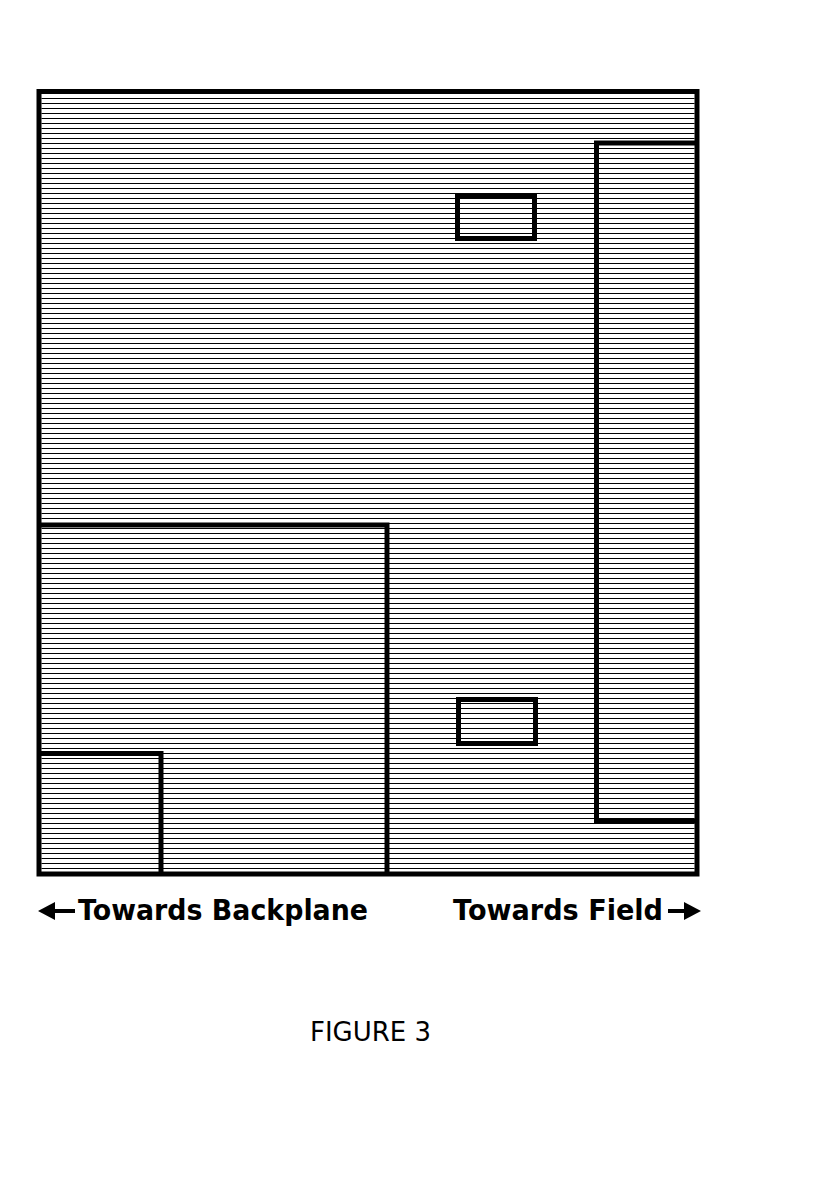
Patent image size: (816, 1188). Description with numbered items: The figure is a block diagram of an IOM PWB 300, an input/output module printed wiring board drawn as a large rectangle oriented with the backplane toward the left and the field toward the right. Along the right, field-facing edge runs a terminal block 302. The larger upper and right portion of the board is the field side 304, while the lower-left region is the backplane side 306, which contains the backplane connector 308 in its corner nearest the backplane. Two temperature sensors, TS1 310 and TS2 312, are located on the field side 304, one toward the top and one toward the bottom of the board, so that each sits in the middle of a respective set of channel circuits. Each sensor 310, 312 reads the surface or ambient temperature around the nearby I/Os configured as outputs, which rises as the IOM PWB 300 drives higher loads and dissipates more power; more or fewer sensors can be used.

The IOM PWB 300 is at (128, 74).
The terminal block 302 is at (653, 536).
The field side 304 is at (373, 454).
The backplane side 306 is at (218, 736).
The backplane connector 308 is at (109, 856).
The temperature sensor TS1 310 is at (471, 181).
The temperature sensor TS2 312 is at (494, 686).